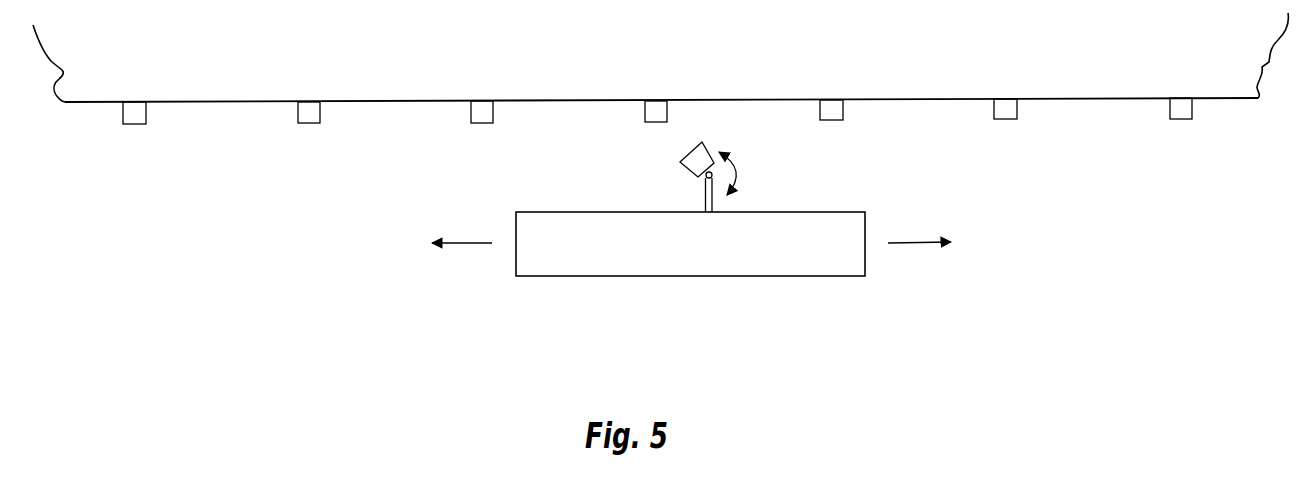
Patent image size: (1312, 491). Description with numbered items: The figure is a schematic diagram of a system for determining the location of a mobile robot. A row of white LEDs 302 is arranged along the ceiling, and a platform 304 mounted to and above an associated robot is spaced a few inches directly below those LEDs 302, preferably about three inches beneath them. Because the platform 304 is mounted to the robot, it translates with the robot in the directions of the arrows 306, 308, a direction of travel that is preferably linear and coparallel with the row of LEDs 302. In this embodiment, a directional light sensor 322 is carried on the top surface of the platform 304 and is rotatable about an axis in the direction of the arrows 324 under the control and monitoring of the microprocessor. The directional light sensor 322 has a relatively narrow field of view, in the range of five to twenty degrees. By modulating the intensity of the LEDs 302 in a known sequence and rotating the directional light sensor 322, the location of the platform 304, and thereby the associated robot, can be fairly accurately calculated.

The white LEDs 302 is at (128, 125).
The platform 304 is at (710, 253).
The arrow indicating direction of translation 306 is at (457, 243).
The arrow indicating direction of translation 308 is at (928, 243).
The directional light sensor 322 is at (681, 157).
The arrows indicating rotation direction 324 is at (742, 172).